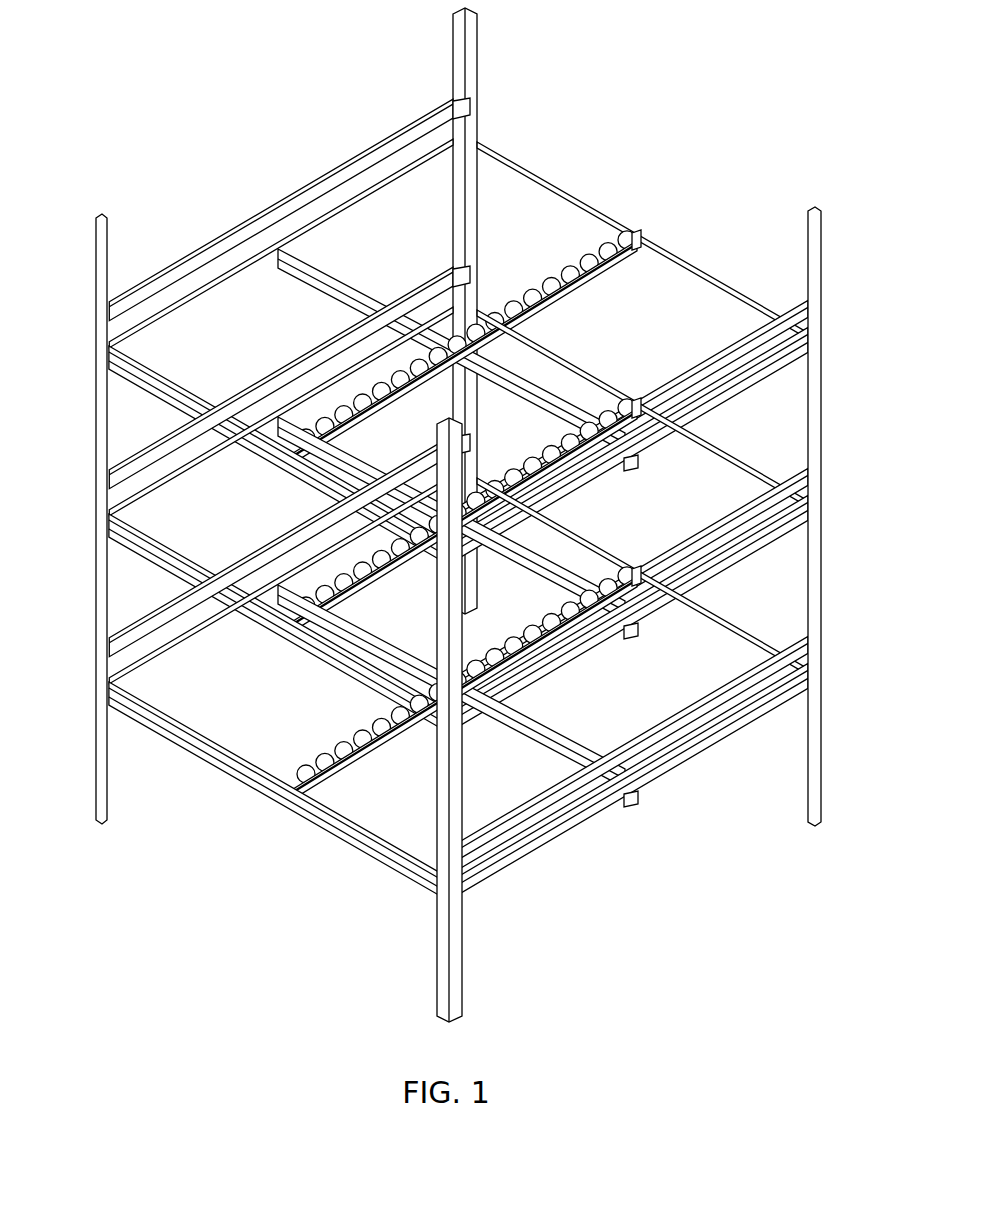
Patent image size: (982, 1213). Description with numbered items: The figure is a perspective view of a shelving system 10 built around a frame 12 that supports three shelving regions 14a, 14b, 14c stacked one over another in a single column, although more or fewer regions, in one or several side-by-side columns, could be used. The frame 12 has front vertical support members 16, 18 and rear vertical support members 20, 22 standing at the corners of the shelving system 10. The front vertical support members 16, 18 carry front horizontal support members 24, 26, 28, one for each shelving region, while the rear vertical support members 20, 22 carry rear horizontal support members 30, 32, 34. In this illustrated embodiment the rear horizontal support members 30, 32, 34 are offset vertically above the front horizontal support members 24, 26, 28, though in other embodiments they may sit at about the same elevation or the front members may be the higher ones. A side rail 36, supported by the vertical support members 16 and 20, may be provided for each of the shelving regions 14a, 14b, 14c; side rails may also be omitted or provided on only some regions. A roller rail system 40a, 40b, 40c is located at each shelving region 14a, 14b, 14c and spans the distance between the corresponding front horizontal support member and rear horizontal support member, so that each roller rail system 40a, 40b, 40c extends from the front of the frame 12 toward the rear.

The shelving system 10 is at (454, 515).
The frame 12 is at (455, 613).
The shelving region 14a is at (424, 331).
The shelving region 14b is at (424, 499).
The shelving region 14c is at (424, 667).
The front vertical support member 16 is at (95, 362).
The front vertical support member 18 is at (463, 950).
The rear vertical support member 20 is at (478, 38).
The rear vertical support member 22 is at (822, 222).
The front horizontal support member 24 is at (183, 388).
The front horizontal support member 26 is at (279, 623).
The front horizontal support member 28 is at (279, 791).
The rear horizontal support member 30 is at (722, 290).
The rear horizontal support member 32 is at (722, 290).
The rear horizontal support member 34 is at (642, 576).
The side rail 36 is at (258, 220).
The roller rail system 40a is at (328, 401).
The roller rail system 40b is at (328, 401).
The roller rail system 40c is at (435, 685).